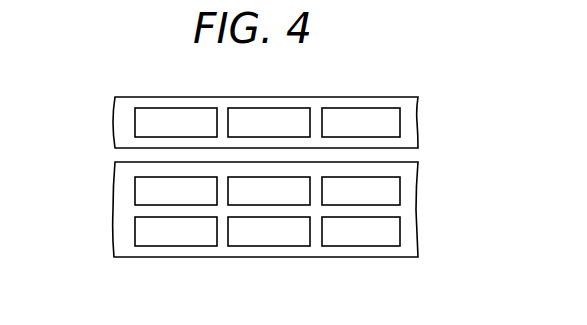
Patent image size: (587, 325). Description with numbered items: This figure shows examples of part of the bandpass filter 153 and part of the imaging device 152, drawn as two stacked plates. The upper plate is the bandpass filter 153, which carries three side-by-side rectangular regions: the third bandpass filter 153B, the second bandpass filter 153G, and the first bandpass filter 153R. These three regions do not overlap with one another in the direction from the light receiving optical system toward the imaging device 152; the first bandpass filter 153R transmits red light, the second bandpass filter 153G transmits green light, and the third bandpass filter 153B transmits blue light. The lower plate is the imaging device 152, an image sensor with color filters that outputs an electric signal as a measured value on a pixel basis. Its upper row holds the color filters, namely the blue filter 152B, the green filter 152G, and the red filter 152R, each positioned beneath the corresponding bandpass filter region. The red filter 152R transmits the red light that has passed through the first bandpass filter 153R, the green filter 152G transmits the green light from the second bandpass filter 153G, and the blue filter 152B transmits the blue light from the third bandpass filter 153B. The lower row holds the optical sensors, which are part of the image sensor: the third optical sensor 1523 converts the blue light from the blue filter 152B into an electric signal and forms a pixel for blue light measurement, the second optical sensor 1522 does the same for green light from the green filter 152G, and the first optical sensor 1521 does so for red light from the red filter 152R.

The bandpass filter 153 is at (421, 109).
The third bandpass filter 153B is at (194, 108).
The second bandpass filter 153G is at (283, 108).
The first bandpass filter 153R is at (383, 108).
The imaging device 152 is at (421, 213).
The blue filter 152B is at (134, 187).
The green filter 152G is at (236, 177).
The red filter 152R is at (393, 177).
The third optical sensor 1523 is at (172, 246).
The second optical sensor 1522 is at (260, 246).
The first optical sensor 1521 is at (352, 246).